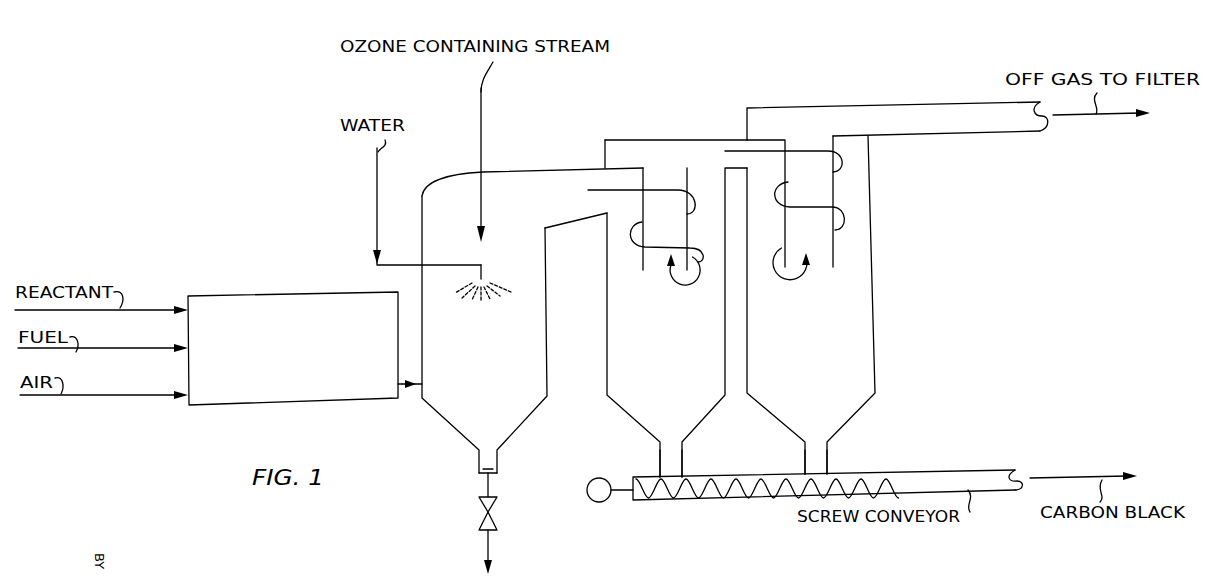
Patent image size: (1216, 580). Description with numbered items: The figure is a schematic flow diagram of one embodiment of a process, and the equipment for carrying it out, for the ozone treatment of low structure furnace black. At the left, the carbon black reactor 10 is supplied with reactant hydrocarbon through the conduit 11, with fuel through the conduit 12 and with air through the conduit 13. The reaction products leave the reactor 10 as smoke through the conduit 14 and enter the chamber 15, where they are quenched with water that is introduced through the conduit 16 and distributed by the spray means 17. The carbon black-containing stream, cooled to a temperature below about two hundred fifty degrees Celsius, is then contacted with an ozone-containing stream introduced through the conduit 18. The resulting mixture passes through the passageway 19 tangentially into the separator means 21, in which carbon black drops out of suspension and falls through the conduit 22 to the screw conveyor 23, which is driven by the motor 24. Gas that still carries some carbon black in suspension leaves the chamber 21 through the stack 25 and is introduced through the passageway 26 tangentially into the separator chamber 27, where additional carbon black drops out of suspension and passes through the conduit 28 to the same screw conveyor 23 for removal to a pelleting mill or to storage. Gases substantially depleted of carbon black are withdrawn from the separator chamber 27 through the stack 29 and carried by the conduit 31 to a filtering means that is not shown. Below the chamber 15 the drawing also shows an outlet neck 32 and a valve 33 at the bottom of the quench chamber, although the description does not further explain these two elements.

The carbon black reactor 10 is at (285, 377).
The conduit 11 is at (160, 309).
The conduit 12 is at (158, 349).
The conduit 13 is at (152, 395).
The conduit 14 is at (412, 385).
The chamber 15 is at (480, 347).
The conduit 16 is at (377, 170).
The spray means 17 is at (482, 278).
The conduit 18 is at (478, 106).
The passageway 19 is at (532, 196).
The separator means 21 is at (657, 342).
The conduit 22 is at (683, 459).
The screw conveyor 23 is at (773, 498).
The motor 24 is at (590, 477).
The stack 25 is at (680, 237).
The passageway 26 is at (689, 160).
The separator chamber 27 is at (804, 338).
The conduit 28 is at (828, 462).
The stack 29 is at (798, 226).
The conduit 31 is at (927, 103).
The quench tank outlet neck 32 is at (498, 458).
The valve 33 is at (494, 505).